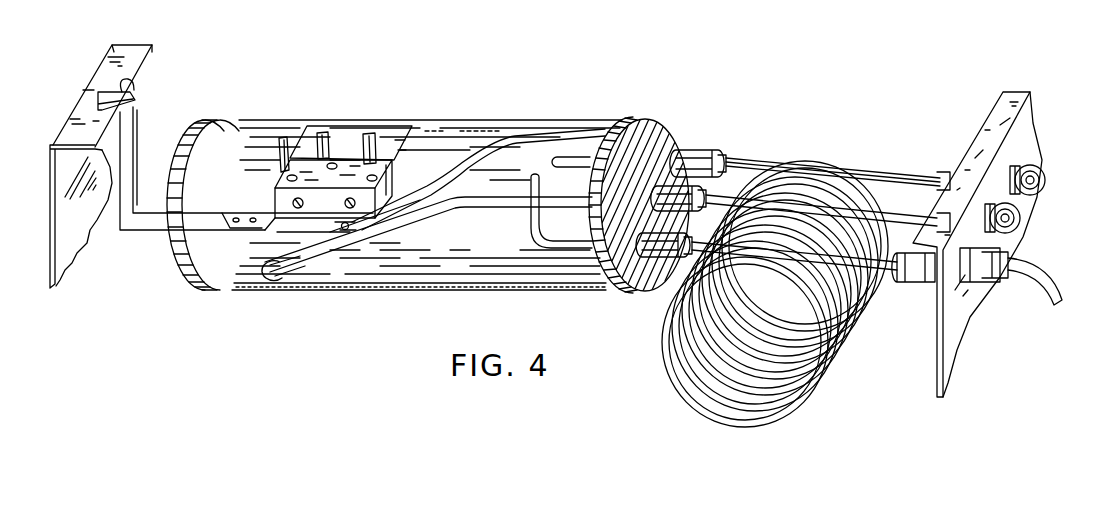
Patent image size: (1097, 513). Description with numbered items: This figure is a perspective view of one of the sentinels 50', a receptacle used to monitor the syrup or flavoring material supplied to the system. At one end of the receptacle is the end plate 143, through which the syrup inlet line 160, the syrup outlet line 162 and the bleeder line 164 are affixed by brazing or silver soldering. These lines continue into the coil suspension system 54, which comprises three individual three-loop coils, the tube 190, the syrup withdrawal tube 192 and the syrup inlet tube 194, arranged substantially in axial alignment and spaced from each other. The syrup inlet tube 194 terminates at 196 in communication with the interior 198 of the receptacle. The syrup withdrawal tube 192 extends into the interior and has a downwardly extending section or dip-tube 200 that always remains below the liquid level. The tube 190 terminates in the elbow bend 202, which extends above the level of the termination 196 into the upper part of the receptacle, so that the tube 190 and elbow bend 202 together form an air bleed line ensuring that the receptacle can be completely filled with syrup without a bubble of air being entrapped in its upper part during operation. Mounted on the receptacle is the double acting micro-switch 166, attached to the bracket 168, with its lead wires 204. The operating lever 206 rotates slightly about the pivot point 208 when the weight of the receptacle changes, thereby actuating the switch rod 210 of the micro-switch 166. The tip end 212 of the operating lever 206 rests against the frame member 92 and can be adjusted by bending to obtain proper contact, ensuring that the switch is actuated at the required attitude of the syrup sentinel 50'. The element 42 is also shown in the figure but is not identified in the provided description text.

The mounting plate 92 is at (122, 44).
The hook tab 212 is at (136, 78).
The support bracket 206 is at (150, 223).
The heater assembly 50' is at (394, 184).
The end plate 143 is at (668, 130).
The terminal 204 is at (291, 137).
The terminal 166 is at (338, 152).
The terminal 168 is at (392, 128).
The lead wire 198 is at (543, 137).
The tube stub 196 is at (568, 158).
The bent tube 202 is at (536, 218).
The flattened tube 208 is at (388, 243).
The tube end 200 is at (318, 272).
The wire end 210 is at (323, 226).
The fitting 160 is at (695, 160).
The fitting 162 is at (722, 183).
The fitting 164 is at (667, 250).
The tube 194 is at (827, 160).
The tube 192 is at (934, 221).
The coil 54 is at (654, 384).
The fitting 190 is at (866, 295).
The panel 42 is at (1014, 93).